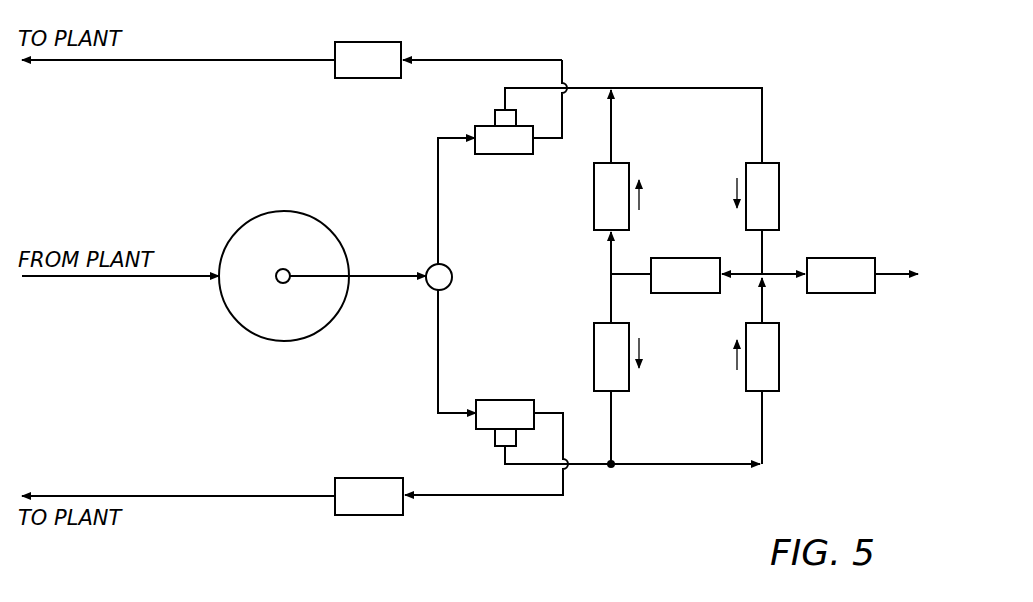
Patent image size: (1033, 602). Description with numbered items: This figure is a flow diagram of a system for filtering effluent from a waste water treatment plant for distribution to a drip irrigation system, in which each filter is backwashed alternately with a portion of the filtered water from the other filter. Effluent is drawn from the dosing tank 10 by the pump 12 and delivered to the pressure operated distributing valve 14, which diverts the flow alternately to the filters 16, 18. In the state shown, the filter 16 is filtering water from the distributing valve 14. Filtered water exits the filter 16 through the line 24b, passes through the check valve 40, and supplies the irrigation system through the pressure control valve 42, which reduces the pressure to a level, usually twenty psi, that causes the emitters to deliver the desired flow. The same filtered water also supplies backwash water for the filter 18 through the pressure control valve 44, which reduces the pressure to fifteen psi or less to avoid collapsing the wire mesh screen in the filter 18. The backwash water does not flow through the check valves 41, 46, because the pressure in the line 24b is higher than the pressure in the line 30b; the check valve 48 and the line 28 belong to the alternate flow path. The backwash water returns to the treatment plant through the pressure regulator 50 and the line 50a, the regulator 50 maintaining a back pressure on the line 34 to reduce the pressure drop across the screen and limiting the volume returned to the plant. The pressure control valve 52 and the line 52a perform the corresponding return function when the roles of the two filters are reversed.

The dosing tank 10 is at (323, 326).
The pump 12 is at (280, 284).
The pressure operated distributing valve 14 is at (452, 275).
The filter 16 is at (505, 400).
The filter 18 is at (506, 156).
The line 24b is at (585, 466).
The conduit 28 is at (530, 498).
The line 30b is at (680, 86).
The line 34 is at (497, 58).
The check valve 40 is at (780, 348).
The check valve 41 is at (780, 196).
The pressure control valve 42 is at (849, 257).
The pressure control valve 44 is at (686, 256).
The check valve 46 is at (593, 348).
The check valve 48 is at (593, 205).
The pressure regulator 50 is at (368, 40).
The line 50a is at (231, 58).
The pressure control valve 52 is at (377, 518).
The line 52a is at (228, 500).